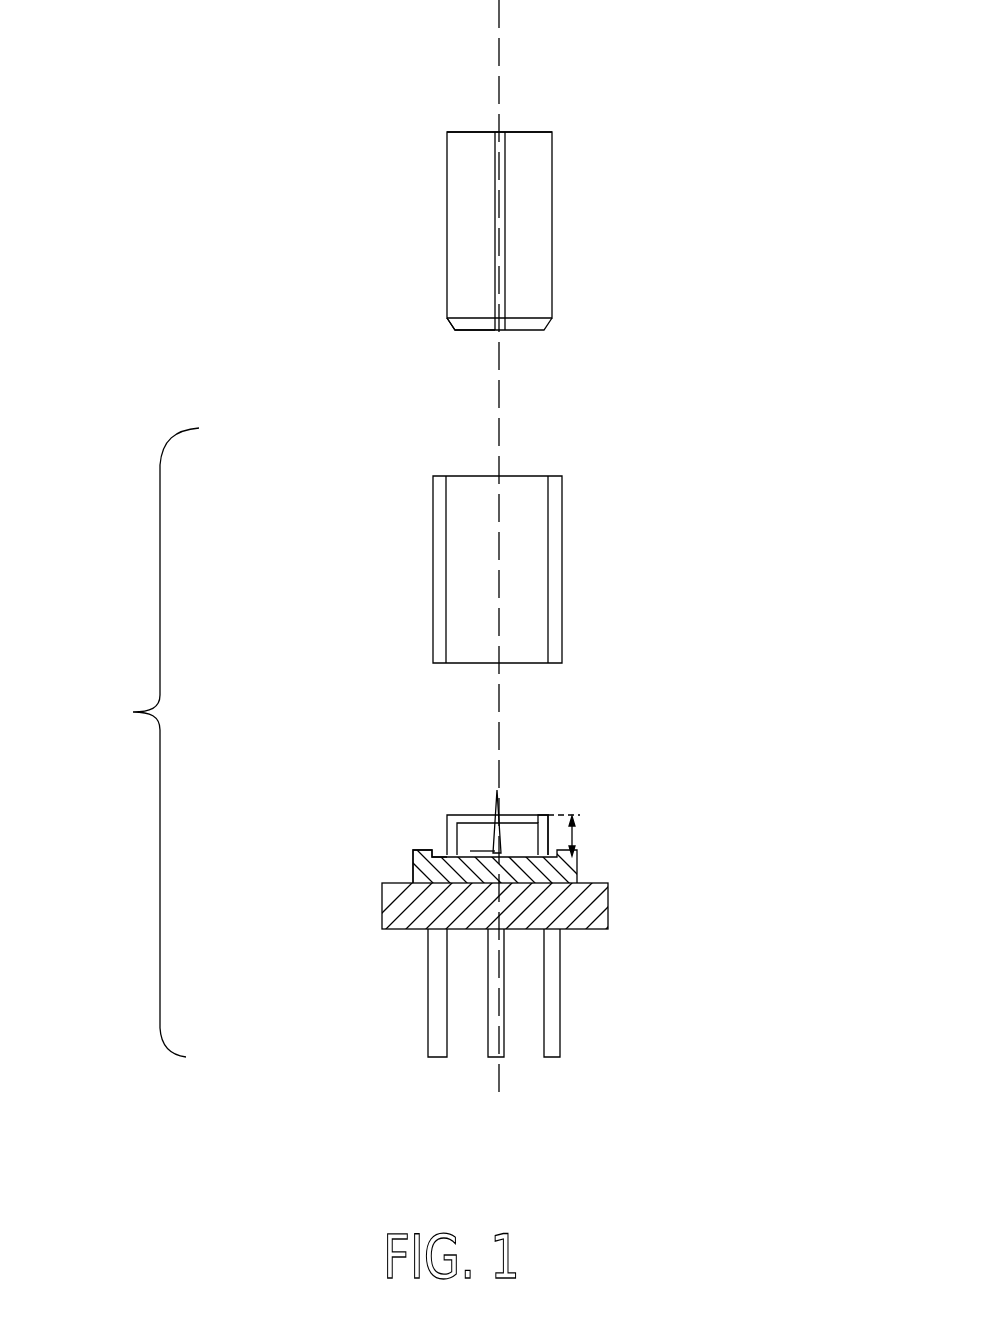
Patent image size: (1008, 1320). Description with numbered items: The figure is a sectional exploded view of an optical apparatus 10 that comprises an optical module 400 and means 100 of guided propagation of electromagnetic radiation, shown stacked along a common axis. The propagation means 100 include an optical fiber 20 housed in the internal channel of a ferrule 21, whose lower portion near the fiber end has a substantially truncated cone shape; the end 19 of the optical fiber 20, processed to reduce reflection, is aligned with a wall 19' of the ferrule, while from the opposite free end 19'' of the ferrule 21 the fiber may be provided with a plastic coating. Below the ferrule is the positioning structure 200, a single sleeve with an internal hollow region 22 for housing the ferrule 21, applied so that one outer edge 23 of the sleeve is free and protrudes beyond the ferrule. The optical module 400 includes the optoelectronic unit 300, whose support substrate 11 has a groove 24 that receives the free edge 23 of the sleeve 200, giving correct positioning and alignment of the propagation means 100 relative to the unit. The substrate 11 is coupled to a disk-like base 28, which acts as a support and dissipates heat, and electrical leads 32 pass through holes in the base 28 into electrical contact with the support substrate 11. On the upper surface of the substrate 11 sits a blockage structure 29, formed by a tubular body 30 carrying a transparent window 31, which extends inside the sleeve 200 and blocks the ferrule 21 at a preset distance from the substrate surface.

The optical apparatus 10 is at (834, 123).
The propagation means 100 is at (521, 232).
The ferrule 21 is at (472, 233).
The optical fiber 20 is at (505, 173).
The end of the optical fiber 19 is at (539, 358).
The wall of the ferrule 19' is at (432, 354).
The free end of the ferrule 19'' is at (476, 99).
The positioning structure 200 is at (573, 550).
The internal hollow region 22 is at (538, 497).
The outer edge of the sleeve 23 is at (555, 640).
The optoelectronic unit 300 is at (538, 898).
The base 28 is at (382, 908).
The support substrate 11 is at (575, 868).
The groove 24 is at (442, 852).
The tubular body 30 is at (488, 792).
The window 31 is at (470, 812).
The blockage structure 29 is at (547, 814).
The electrical leads 32 is at (428, 1042).
The optical module 400 is at (127, 742).